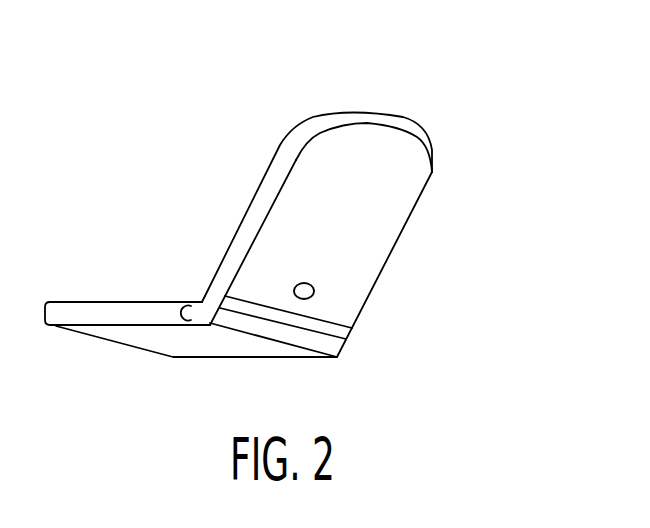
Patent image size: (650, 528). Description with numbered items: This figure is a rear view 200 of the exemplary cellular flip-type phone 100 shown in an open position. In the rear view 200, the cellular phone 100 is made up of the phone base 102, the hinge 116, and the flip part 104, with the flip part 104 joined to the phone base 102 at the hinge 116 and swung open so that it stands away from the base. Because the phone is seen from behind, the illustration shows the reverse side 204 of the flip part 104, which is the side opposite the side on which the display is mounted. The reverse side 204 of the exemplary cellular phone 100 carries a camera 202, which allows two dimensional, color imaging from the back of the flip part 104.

The cellular phone 100 is at (206, 199).
The phone base 102 is at (90, 301).
The flip part 104 is at (413, 212).
The hinge 116 is at (193, 317).
The rear view 200 is at (432, 422).
The camera 202 is at (309, 292).
The reverse side 204 is at (383, 153).